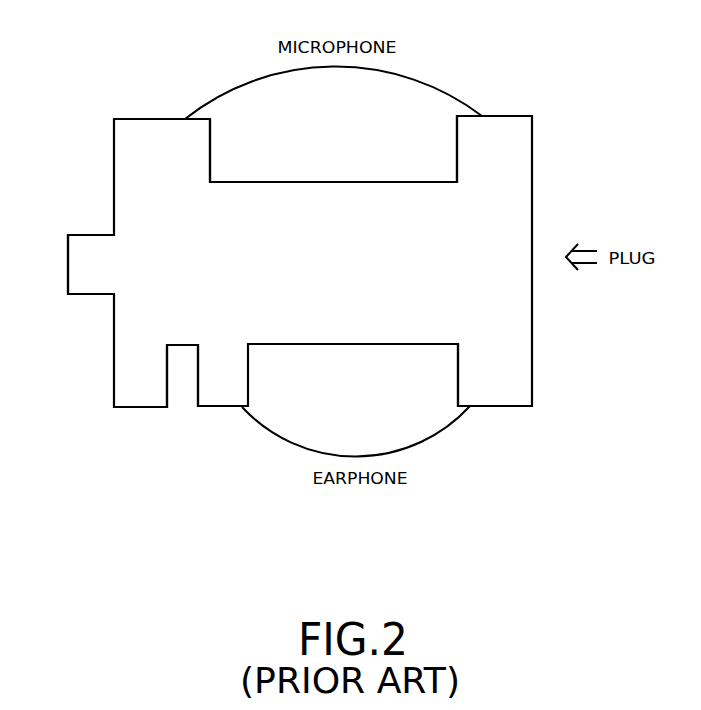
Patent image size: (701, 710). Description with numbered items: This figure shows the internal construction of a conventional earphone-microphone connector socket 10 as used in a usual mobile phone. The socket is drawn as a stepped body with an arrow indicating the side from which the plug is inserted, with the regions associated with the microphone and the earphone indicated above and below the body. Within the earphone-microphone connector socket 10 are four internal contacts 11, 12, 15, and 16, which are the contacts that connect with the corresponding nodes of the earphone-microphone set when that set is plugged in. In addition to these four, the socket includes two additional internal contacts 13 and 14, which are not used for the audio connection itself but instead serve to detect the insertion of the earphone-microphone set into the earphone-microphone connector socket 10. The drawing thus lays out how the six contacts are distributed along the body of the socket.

The earphone-microphone connector socket 10 is at (472, 245).
The internal contact 11 is at (511, 115).
The internal contact 12 is at (210, 409).
The additional internal contact 13 is at (128, 409).
The additional internal contact 14 is at (67, 251).
The internal contact 15 is at (137, 118).
The internal contact 16 is at (515, 407).